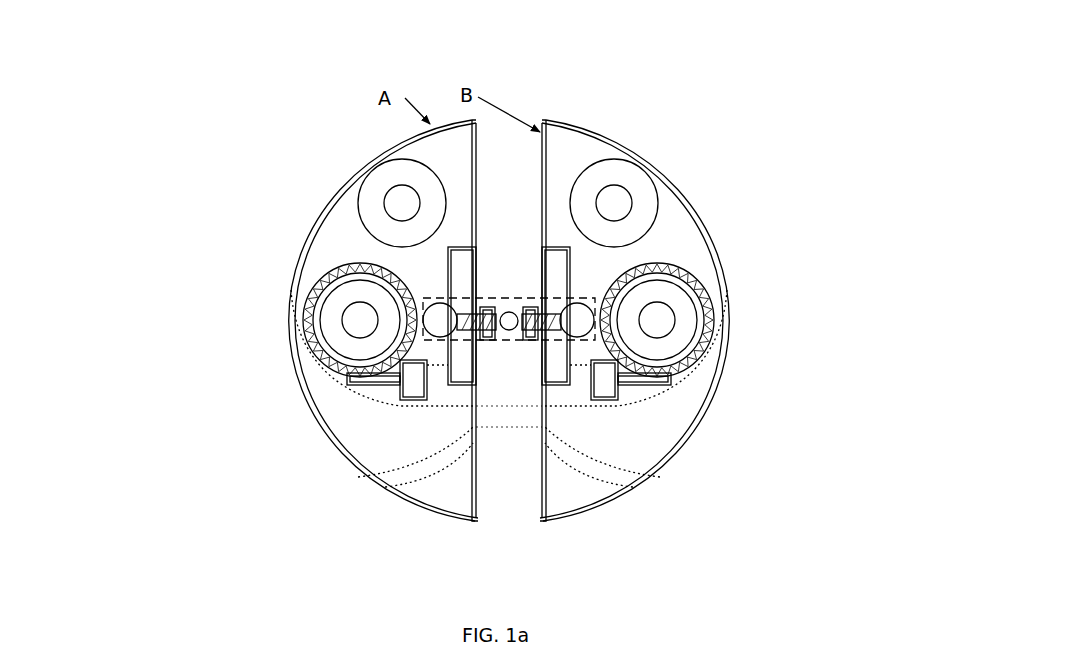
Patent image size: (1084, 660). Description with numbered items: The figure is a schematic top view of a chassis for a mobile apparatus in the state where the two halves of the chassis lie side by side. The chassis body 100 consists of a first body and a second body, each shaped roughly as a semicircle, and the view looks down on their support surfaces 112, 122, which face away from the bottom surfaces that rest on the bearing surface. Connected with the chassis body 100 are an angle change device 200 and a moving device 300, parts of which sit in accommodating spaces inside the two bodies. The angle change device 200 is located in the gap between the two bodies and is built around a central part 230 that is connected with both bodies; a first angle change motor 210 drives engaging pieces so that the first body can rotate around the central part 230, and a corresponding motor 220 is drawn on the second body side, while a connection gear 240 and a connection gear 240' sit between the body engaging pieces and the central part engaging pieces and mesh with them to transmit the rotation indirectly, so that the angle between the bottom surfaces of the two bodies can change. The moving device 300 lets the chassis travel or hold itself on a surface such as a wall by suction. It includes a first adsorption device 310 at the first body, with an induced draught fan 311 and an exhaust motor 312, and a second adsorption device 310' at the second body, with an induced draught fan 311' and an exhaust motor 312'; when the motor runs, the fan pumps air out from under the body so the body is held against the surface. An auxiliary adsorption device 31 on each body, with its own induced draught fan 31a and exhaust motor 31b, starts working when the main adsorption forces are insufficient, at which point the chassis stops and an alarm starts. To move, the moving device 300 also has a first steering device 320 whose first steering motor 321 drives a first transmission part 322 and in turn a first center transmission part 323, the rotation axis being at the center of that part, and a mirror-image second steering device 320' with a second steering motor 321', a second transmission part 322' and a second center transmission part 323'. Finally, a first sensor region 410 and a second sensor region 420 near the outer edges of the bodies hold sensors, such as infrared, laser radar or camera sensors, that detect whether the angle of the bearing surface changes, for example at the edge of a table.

The chassis body 100 is at (509, 280).
The support surface 112 is at (389, 174).
The support surface 122 is at (577, 153).
The auxiliary adsorption device 31 is at (510, 184).
The induced draught fan 31a is at (418, 158).
The exhaust motor 31b is at (380, 207).
The angle change device 200 is at (503, 343).
The first angle change motor 210 is at (435, 301).
The second pivot shaft 220 is at (583, 318).
The central part 230 is at (509, 316).
The connection gear 240 is at (378, 409).
The connection gear 240' is at (643, 409).
The moving device 300 is at (523, 420).
The first adsorption device 310 is at (267, 310).
The induced draught fan 311 is at (292, 320).
The exhaust motor 312 is at (281, 290).
The second adsorption device 310' is at (736, 319).
The induced draught fan 311' is at (707, 320).
The exhaust motor 312' is at (718, 300).
The first steering device 320 is at (308, 379).
The first steering motor 321 is at (322, 414).
The first transmission part 322 is at (309, 399).
The first center transmission part 323 is at (345, 348).
The second steering device 320' is at (716, 363).
The second steering motor 321' is at (703, 398).
The second transmission part 322' is at (716, 392).
The second center transmission part 323' is at (680, 348).
The first sensor region 410 is at (418, 472).
The second sensor region 420 is at (591, 476).